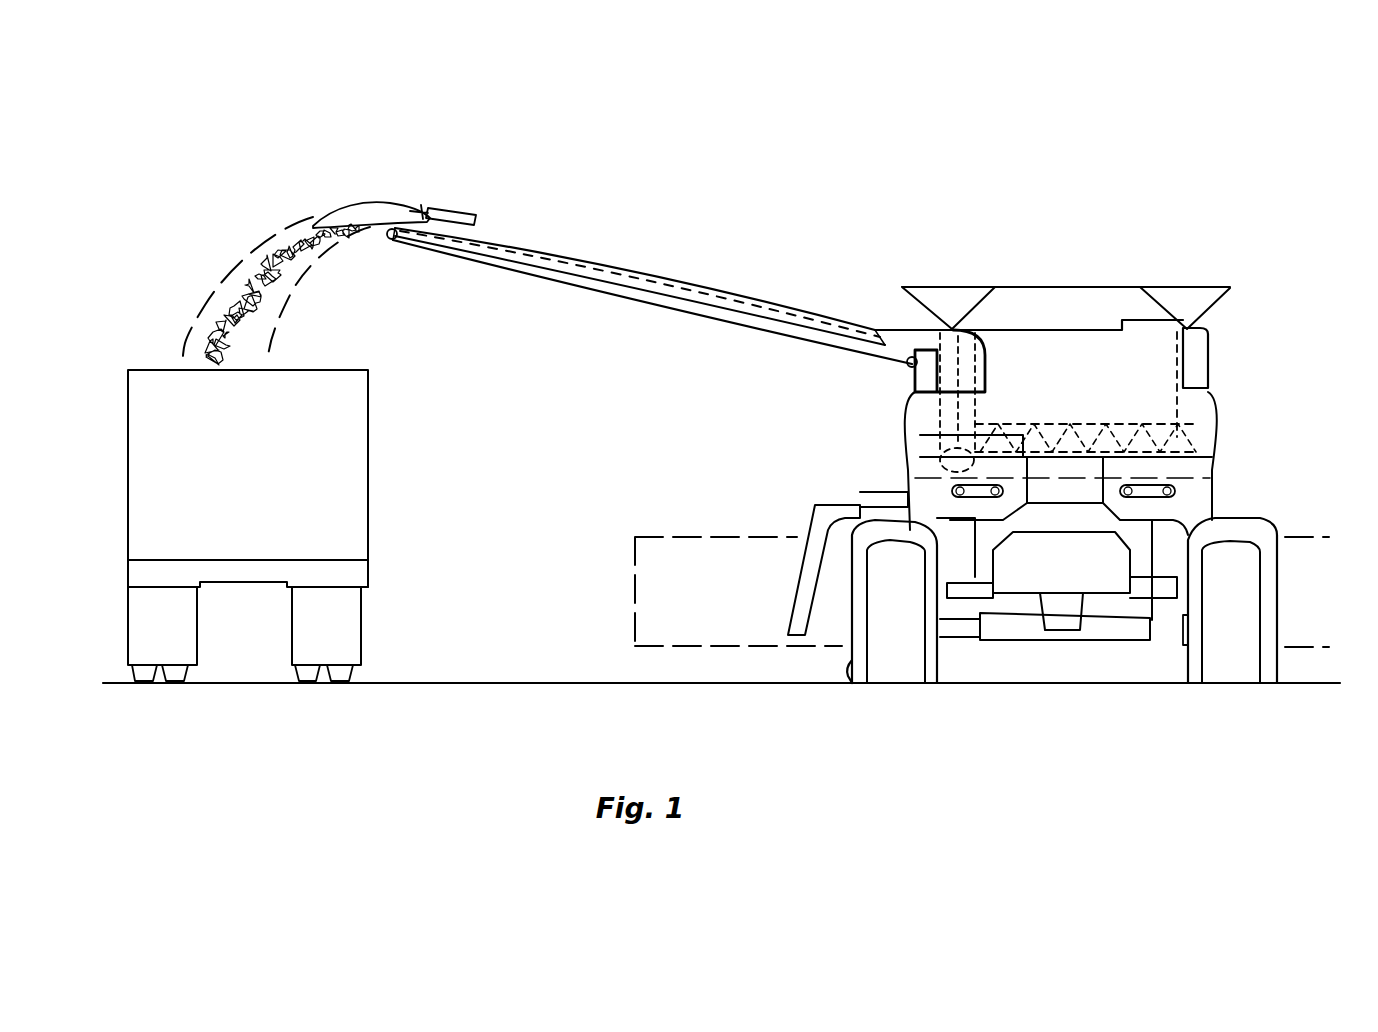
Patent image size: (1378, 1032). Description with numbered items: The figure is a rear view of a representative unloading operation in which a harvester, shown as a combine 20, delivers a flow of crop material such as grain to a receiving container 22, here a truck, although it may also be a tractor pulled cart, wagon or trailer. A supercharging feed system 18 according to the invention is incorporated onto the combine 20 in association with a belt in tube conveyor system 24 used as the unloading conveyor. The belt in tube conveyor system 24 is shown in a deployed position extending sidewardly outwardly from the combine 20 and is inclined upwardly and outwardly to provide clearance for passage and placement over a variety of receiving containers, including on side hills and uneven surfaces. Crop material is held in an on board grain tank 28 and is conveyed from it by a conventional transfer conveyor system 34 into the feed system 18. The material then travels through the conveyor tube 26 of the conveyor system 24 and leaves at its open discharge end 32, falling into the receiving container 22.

The supercharging feed system 18 is at (893, 320).
The combine 20 is at (1001, 441).
The receiving container 22 is at (390, 423).
The belt in tube conveyor system 24 is at (652, 263).
The conveyor tube 26 is at (562, 252).
The grain tank 28 is at (1027, 278).
The discharge end 32 is at (370, 236).
The transfer conveyor system 34 is at (1005, 420).